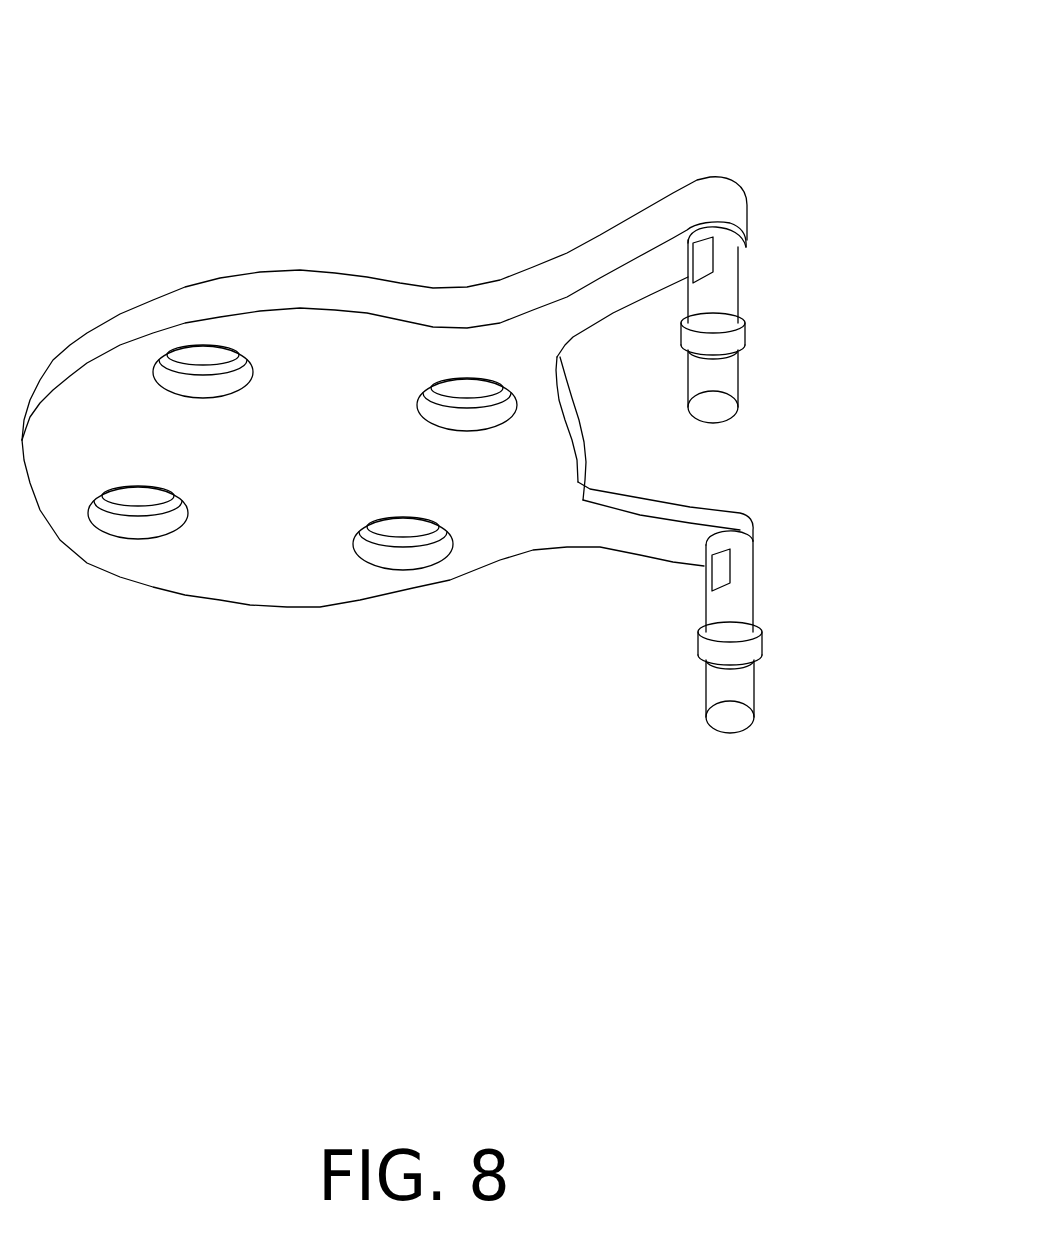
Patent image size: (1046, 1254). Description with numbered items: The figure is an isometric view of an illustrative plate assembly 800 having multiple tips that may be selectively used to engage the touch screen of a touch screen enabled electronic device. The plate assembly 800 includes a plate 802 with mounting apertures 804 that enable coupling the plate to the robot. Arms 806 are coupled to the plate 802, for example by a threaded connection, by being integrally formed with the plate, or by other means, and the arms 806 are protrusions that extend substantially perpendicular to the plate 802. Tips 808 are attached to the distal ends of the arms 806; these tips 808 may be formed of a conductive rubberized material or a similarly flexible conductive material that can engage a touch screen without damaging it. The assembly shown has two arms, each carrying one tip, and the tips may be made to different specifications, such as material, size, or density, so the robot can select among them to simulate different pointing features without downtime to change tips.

The plate assembly 800 is at (689, 42).
The plate 802 is at (250, 273).
The mounting apertures 804 is at (357, 553).
The arms 806 is at (781, 265).
The tips 808 is at (782, 404).